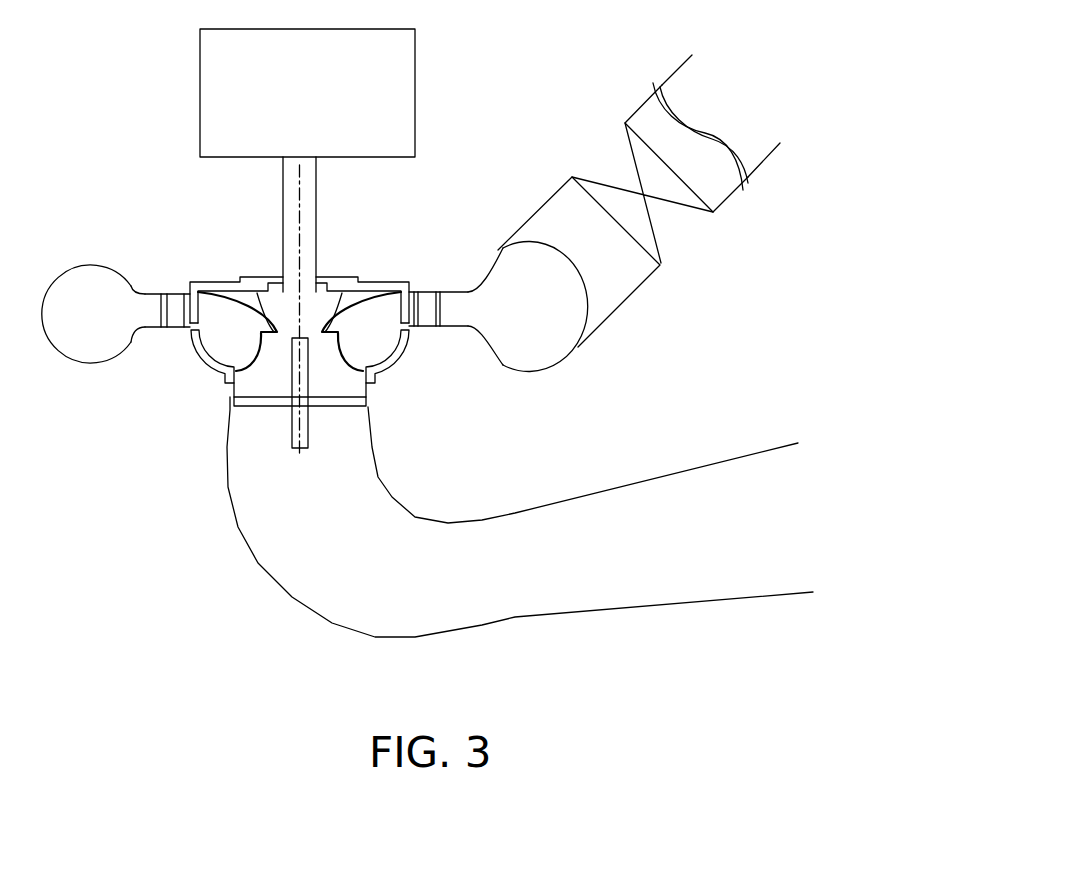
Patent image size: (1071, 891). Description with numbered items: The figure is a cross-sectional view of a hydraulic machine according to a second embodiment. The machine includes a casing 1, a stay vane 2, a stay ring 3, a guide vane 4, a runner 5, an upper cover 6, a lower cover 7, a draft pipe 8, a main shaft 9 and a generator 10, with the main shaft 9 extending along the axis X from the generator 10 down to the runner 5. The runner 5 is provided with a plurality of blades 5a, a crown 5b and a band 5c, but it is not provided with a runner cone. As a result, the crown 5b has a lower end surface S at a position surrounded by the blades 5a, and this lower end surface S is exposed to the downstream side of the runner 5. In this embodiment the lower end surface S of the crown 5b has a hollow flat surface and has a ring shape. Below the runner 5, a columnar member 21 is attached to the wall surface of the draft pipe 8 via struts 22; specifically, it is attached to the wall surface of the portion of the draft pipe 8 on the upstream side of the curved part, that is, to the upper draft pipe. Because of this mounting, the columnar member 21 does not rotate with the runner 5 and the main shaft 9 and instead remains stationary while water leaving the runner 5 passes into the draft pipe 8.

The casing 1 is at (500, 273).
The stay vane 2 is at (450, 315).
The stay ring 3 is at (450, 291).
The guide vane 4 is at (423, 314).
The runner 5 is at (276, 297).
The blades 5a is at (218, 338).
The crown 5b is at (215, 283).
The band 5c is at (222, 355).
The upper cover 6 is at (378, 290).
The lower cover 7 is at (391, 343).
The draft pipe 8 is at (385, 523).
The main shaft 9 is at (316, 192).
The generator 10 is at (400, 95).
The columnar member 21 is at (297, 435).
The struts 22 is at (250, 405).
The lower end surface S is at (276, 315).
The axis X is at (283, 196).